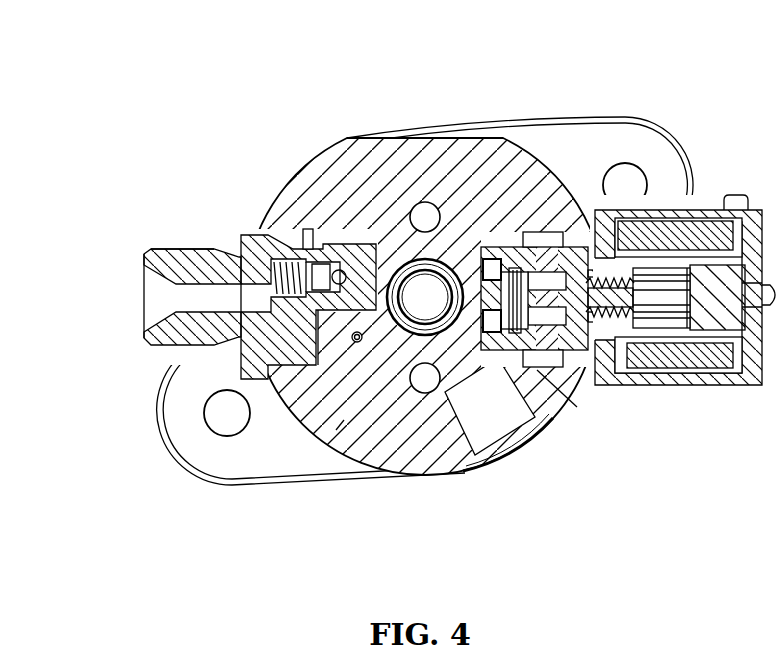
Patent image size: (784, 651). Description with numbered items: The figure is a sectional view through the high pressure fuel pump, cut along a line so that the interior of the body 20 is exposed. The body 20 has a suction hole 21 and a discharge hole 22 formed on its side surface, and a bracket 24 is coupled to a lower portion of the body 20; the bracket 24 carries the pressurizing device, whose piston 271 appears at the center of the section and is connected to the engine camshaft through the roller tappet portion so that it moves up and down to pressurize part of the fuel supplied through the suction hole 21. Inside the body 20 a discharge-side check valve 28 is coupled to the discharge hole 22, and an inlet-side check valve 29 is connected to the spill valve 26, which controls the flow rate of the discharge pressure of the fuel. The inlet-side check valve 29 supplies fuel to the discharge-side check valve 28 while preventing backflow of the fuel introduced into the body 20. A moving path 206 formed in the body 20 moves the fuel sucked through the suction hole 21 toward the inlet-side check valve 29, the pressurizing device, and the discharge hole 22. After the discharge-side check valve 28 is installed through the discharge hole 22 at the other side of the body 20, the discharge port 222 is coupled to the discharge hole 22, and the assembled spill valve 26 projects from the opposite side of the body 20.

The body 20 is at (416, 442).
The suction hole 21 is at (488, 457).
The discharge hole 22 is at (143, 296).
The discharge port 222 is at (178, 247).
The bracket 24 is at (210, 458).
The spill valve 26 is at (688, 398).
The discharge-side check valve 28 is at (306, 232).
The inlet-side check valve 29 is at (582, 376).
The moving path 206 is at (392, 314).
The piston 271 is at (430, 292).